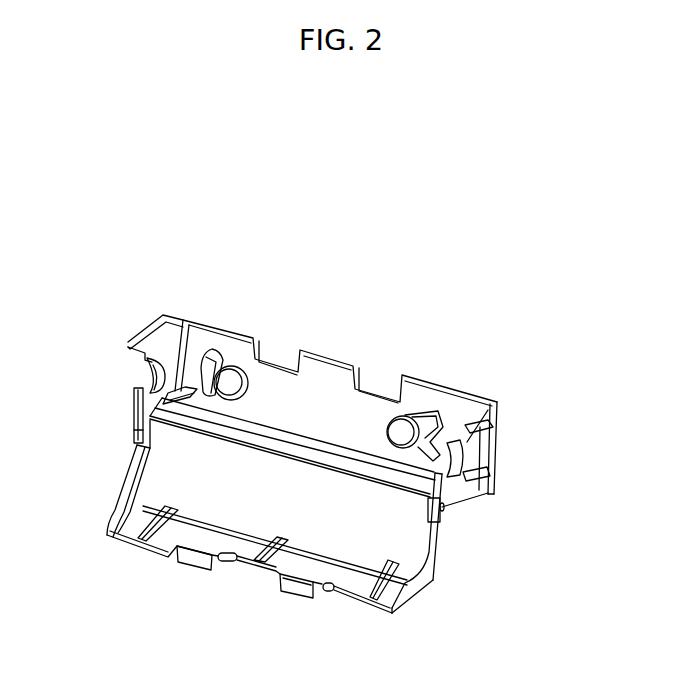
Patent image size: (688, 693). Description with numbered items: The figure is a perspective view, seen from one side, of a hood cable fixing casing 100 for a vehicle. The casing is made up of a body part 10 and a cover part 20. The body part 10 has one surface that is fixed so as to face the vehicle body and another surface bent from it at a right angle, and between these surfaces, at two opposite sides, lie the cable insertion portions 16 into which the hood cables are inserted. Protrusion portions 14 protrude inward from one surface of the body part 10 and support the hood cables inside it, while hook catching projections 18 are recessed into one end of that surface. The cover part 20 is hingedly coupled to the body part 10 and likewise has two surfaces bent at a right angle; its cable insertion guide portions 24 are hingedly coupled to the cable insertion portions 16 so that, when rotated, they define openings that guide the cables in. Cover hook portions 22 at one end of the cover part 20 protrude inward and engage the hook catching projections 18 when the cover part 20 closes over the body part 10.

The hood cable fixing casing 100 is at (201, 202).
The body part 10 is at (513, 452).
The protrusion portion 14 is at (420, 394).
The cable insertion portion 16 is at (144, 367).
The hook catching projection 18 is at (373, 378).
The cover part 20 is at (440, 590).
The cover hook portion 22 is at (298, 585).
The cable insertion guide portion 24 is at (124, 465).